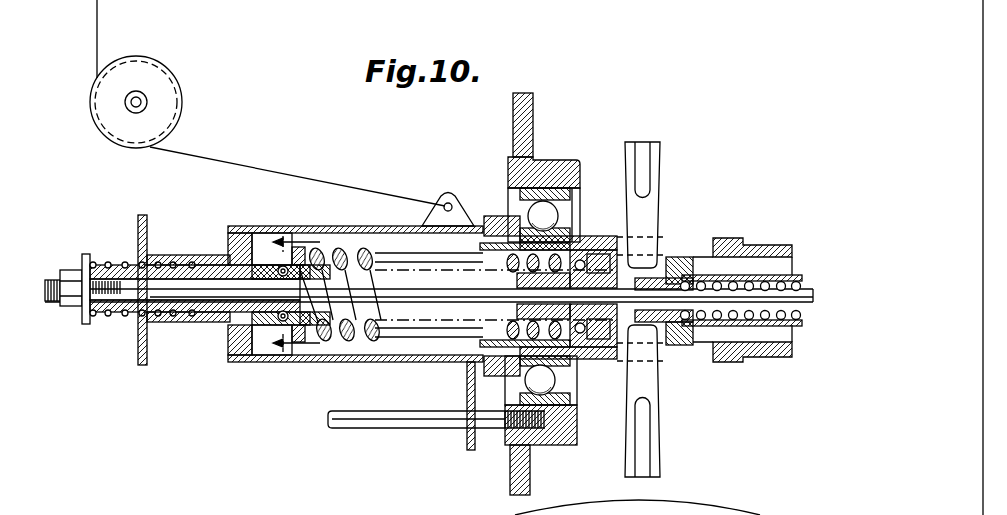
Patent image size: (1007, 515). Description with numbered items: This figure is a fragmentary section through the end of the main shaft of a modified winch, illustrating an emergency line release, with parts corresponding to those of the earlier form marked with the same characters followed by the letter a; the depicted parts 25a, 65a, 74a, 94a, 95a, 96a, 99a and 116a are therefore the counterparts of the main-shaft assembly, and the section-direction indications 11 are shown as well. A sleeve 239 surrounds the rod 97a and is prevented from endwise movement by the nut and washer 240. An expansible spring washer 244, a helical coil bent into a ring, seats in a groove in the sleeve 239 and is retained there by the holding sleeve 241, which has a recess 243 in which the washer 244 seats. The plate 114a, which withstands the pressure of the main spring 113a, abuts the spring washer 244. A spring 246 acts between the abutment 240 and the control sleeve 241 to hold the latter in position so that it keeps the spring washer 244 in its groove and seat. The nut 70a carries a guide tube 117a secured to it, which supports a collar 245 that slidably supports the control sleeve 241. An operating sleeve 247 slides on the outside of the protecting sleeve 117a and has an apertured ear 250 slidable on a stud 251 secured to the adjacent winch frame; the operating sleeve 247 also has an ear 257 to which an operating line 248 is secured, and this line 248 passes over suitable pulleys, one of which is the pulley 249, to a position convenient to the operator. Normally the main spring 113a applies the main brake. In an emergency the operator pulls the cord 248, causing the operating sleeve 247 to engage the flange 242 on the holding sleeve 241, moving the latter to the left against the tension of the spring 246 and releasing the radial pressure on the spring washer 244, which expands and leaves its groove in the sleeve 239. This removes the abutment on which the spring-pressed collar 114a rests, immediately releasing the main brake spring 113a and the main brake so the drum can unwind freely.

The pulley 249 is at (178, 88).
The operating line 248 is at (260, 168).
The rod 97a is at (452, 303).
The nut and washer 240 is at (87, 320).
The sleeve 239 is at (175, 312).
The spring 246 is at (118, 318).
The flange 242 is at (140, 360).
The holding sleeve 241 is at (180, 255).
The operating sleeve 247 is at (368, 228).
The ear 257 is at (447, 201).
The recess 243 is at (246, 238).
The collar 245 is at (248, 345).
The spring washer 244 is at (283, 322).
The plate 114a is at (300, 247).
The direction arrow 11 is at (308, 293).
The main spring 113a is at (345, 339).
The guide tube 117a is at (389, 362).
The nut 70a is at (497, 216).
The apertured ear 250 is at (468, 446).
The stud 251 is at (358, 429).
The hub 99a is at (717, 326).
The plate 25a is at (533, 110).
The ball bearing 65a is at (546, 210).
The fork 74a is at (650, 200).
The nut 96a is at (668, 257).
The housing 116a is at (738, 363).
The sleeve 94a is at (770, 275).
The spring 95a is at (685, 258).